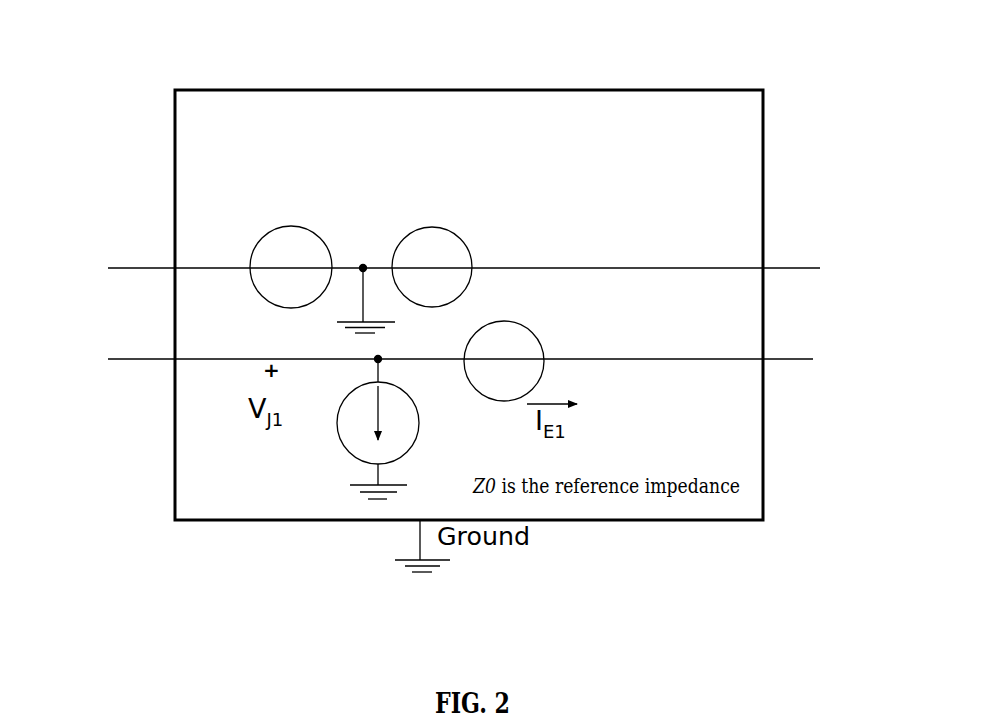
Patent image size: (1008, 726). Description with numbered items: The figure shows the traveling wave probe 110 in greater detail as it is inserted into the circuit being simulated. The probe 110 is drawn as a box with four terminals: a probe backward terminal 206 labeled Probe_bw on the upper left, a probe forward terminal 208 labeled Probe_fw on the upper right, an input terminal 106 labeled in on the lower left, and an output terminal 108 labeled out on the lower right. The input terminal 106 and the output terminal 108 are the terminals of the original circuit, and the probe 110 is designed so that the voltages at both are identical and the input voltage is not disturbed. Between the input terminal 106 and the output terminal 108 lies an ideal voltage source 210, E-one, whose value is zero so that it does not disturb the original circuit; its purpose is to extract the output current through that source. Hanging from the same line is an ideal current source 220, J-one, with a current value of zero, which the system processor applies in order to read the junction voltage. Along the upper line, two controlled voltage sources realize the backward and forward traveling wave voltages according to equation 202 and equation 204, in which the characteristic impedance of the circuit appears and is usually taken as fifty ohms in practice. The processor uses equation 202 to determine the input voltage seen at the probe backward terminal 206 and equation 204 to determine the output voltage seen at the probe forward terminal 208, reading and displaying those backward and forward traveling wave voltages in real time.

The traveling wave probe 110 is at (853, 125).
The equation for backward wave voltage 202 is at (291, 247).
The equation for forward wave voltage 204 is at (432, 253).
The probe backward terminal 206 is at (136, 258).
The probe forward terminal 208 is at (803, 270).
The ideal voltage source 210 is at (532, 342).
The ideal current source 220 is at (345, 445).
The input terminal 106 is at (132, 392).
The output terminal 108 is at (793, 393).